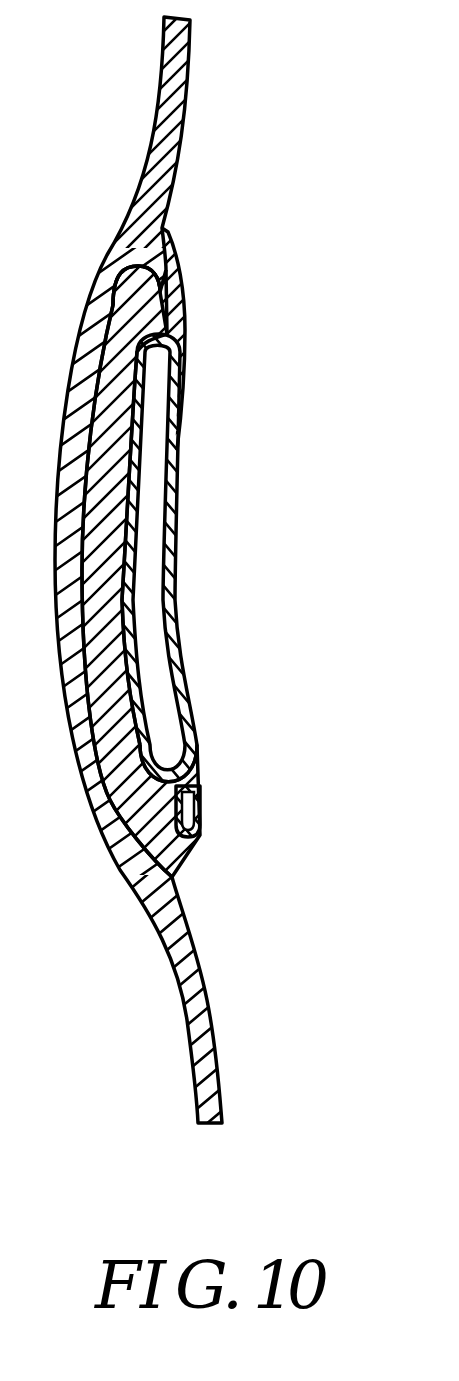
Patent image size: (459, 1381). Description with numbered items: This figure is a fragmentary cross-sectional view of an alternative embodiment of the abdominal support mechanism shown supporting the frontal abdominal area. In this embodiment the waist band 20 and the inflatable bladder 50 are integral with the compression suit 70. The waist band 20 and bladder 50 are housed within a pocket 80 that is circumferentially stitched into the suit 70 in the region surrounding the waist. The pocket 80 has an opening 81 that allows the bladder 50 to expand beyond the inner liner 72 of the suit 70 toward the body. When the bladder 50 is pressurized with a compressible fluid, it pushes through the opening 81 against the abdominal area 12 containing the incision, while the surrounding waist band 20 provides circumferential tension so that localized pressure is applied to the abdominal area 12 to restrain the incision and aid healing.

The compression suit 70 is at (187, 75).
The inner liner 72 is at (170, 268).
The waist band 20 is at (163, 300).
The opening 81 is at (157, 327).
The abdominal area 12 is at (177, 540).
The inflatable bladder 50 is at (197, 745).
The pocket 80 is at (203, 833).